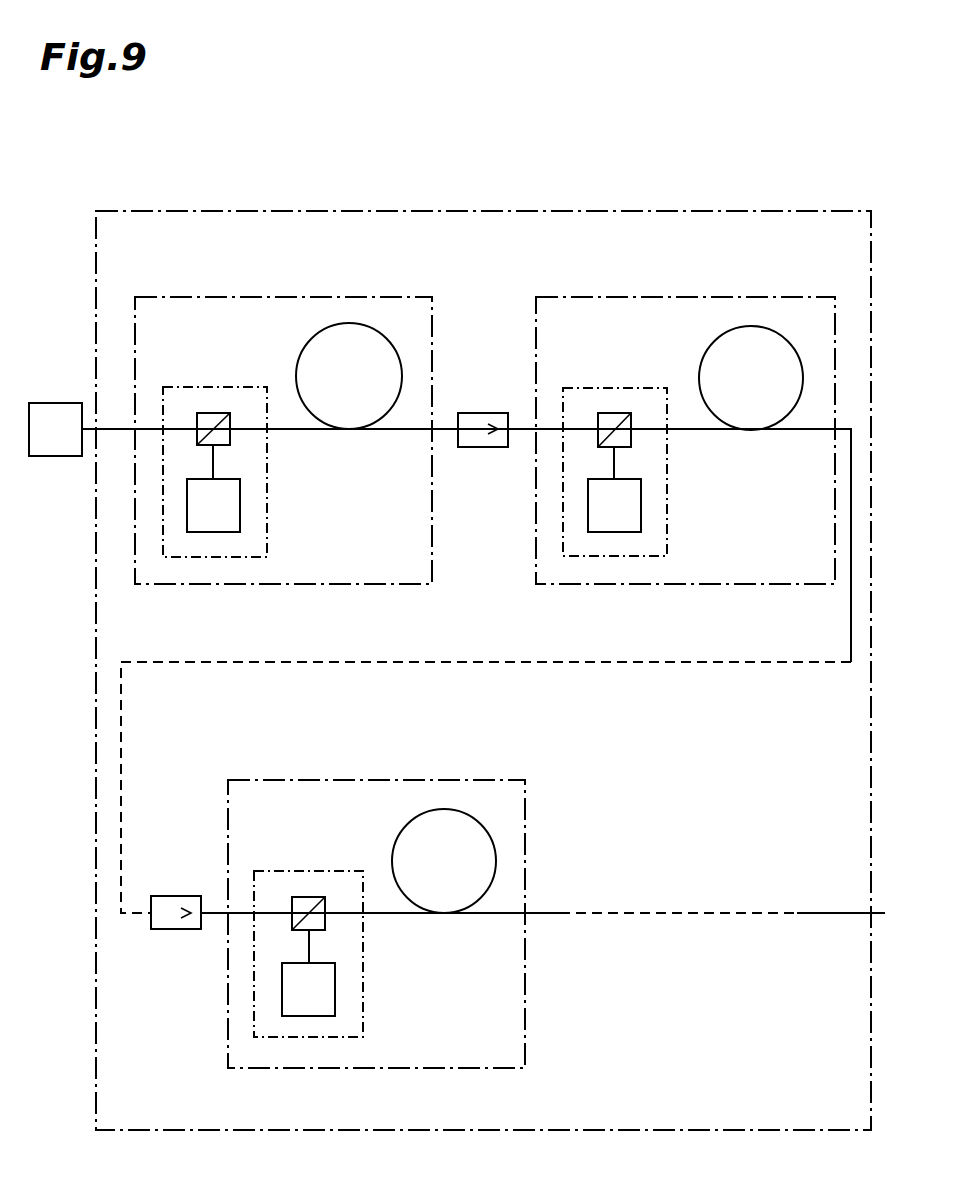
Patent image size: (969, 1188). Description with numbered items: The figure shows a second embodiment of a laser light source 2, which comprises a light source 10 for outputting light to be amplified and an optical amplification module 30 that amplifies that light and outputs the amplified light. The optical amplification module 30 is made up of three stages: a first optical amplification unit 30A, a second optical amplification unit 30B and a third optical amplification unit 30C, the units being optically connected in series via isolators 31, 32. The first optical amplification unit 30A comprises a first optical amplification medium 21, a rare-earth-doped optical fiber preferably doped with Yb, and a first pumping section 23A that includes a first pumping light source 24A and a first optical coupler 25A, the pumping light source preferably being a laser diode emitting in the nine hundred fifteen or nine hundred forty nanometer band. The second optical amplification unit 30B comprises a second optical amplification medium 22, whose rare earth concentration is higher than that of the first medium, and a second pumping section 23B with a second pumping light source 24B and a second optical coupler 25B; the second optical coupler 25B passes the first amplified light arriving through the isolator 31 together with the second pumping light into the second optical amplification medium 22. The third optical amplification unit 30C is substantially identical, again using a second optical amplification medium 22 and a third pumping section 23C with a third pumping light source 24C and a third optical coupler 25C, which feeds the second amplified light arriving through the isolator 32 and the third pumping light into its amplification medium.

The laser light source 2 is at (647, 124).
The optical amplification module 30 is at (810, 211).
The light source 10 is at (56, 403).
The first optical amplification unit 30A is at (178, 297).
The second optical amplification unit 30B is at (578, 297).
The third optical amplification unit 30C is at (272, 780).
The first optical amplification medium 21 is at (355, 324).
The second optical amplification medium 22 is at (758, 327).
The first pumping section 23A is at (267, 545).
The second pumping section 23B is at (667, 546).
The third pumping section 23C is at (363, 1030).
The first pumping light source 24A is at (240, 490).
The second pumping light source 24B is at (641, 491).
The third pumping light source 24C is at (335, 975).
The first optical coupler 25A is at (213, 413).
The second optical coupler 25B is at (615, 413).
The third optical coupler 25C is at (310, 897).
The isolator 31 is at (483, 413).
The isolator 32 is at (176, 896).